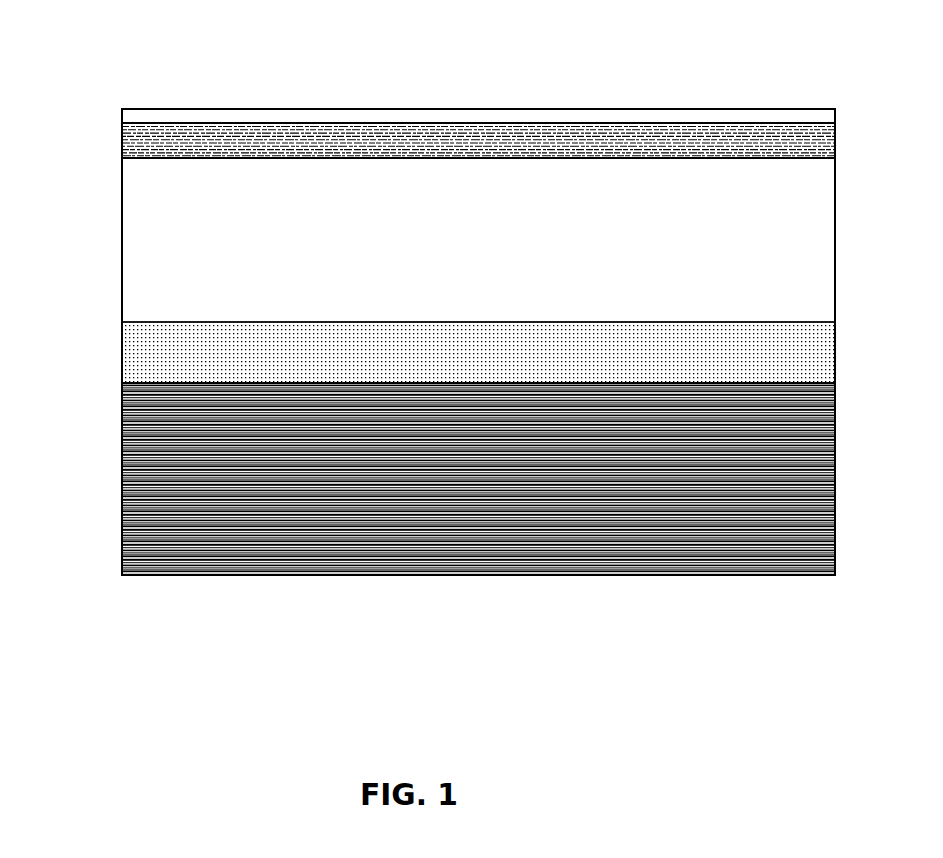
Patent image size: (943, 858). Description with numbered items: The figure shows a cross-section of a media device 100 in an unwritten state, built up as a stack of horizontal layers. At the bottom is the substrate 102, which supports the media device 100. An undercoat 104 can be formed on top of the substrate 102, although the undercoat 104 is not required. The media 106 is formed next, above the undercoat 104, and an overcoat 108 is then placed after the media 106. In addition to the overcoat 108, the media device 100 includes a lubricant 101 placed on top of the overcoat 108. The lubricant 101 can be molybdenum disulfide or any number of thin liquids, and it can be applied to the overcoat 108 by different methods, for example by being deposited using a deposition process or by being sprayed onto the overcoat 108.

The media device 100 is at (334, 610).
The lubricant 101 is at (725, 118).
The substrate 102 is at (123, 512).
The undercoat 104 is at (183, 362).
The media 106 is at (200, 274).
The overcoat 108 is at (140, 133).